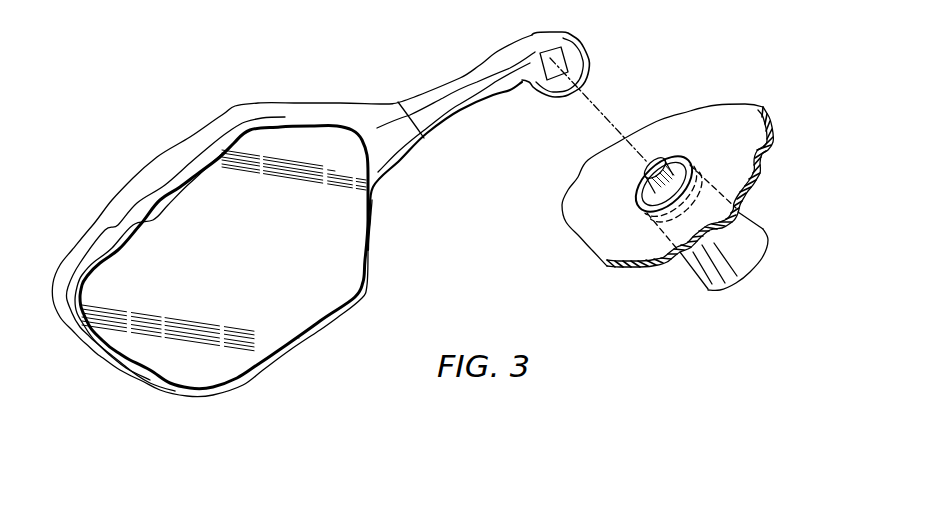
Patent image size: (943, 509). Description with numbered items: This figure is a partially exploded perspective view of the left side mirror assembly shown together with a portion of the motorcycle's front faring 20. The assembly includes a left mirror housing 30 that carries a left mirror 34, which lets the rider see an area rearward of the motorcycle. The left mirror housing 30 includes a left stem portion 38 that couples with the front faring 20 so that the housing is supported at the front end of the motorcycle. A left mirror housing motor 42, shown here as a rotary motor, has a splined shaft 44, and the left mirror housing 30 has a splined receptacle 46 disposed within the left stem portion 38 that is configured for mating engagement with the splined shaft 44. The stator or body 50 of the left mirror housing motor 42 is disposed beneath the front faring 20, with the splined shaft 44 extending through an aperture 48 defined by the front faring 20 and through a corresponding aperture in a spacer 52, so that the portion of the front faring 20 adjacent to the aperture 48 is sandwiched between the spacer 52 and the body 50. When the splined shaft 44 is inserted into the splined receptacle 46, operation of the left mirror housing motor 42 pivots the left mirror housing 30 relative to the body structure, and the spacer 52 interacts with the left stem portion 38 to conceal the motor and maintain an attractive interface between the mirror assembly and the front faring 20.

The front faring 20 is at (728, 108).
The left mirror housing 30 is at (152, 152).
The left mirror 34 is at (168, 362).
The left stem portion 38 is at (460, 80).
The left mirror housing motor 42 is at (747, 277).
The splined shaft 44 is at (646, 171).
The splined receptacle 46 is at (540, 53).
The aperture 48 is at (633, 196).
The body 50 is at (760, 250).
The spacer 52 is at (670, 158).